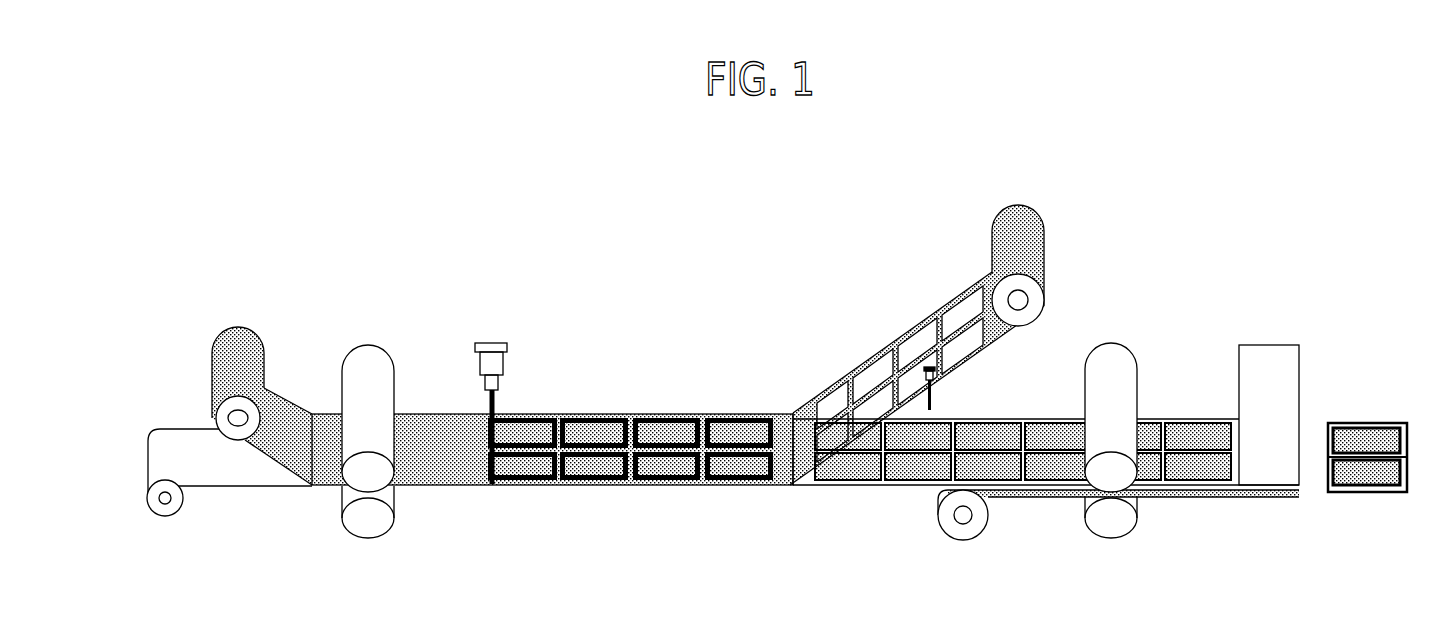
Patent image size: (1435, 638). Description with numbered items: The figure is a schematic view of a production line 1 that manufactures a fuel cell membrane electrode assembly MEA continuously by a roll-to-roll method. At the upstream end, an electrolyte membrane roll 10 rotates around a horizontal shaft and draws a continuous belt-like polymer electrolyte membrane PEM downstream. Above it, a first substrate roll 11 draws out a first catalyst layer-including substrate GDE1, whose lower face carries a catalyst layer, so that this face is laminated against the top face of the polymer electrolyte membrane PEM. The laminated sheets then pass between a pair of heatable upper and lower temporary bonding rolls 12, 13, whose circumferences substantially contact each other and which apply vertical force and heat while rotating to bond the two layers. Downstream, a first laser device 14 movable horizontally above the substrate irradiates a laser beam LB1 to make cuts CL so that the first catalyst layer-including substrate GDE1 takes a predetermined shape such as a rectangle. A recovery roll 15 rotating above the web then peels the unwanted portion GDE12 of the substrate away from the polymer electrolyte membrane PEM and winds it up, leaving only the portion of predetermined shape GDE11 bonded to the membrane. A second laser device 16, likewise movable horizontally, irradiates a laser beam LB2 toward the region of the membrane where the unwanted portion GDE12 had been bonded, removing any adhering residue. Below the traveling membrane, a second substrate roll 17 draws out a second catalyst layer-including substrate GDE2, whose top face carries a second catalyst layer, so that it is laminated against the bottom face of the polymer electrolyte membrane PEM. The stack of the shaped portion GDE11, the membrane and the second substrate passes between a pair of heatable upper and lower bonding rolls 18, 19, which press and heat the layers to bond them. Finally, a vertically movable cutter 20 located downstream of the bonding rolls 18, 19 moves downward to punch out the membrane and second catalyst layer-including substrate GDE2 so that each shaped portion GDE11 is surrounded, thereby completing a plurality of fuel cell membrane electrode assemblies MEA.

The production line 1 is at (1308, 187).
The electrolyte membrane roll 10 is at (165, 502).
The polymer electrolyte membrane PEM is at (225, 470).
The first catalyst layer-including substrate GDE1 is at (238, 338).
The first substrate roll 11 is at (228, 393).
The upper temporary bonding roll 12 is at (368, 363).
The lower temporary bonding roll 13 is at (367, 528).
The first laser device 14 is at (497, 363).
The laser beam LB1 is at (496, 400).
The cuts CL is at (588, 478).
The portion of a predetermined shape GDE11 is at (675, 428).
The unwanted portion GDE12 is at (835, 383).
The recovery roll 15 is at (1025, 292).
The second laser device 16 is at (936, 372).
The laser beam LB2 is at (932, 395).
The second substrate roll 17 is at (965, 520).
The second catalyst layer-including substrate GDE2 is at (1040, 500).
The upper bonding roll 18 is at (1122, 360).
The lower bonding roll 19 is at (1118, 527).
The cutter 20 is at (1280, 353).
The fuel cell membrane electrode assembly MEA is at (1373, 430).